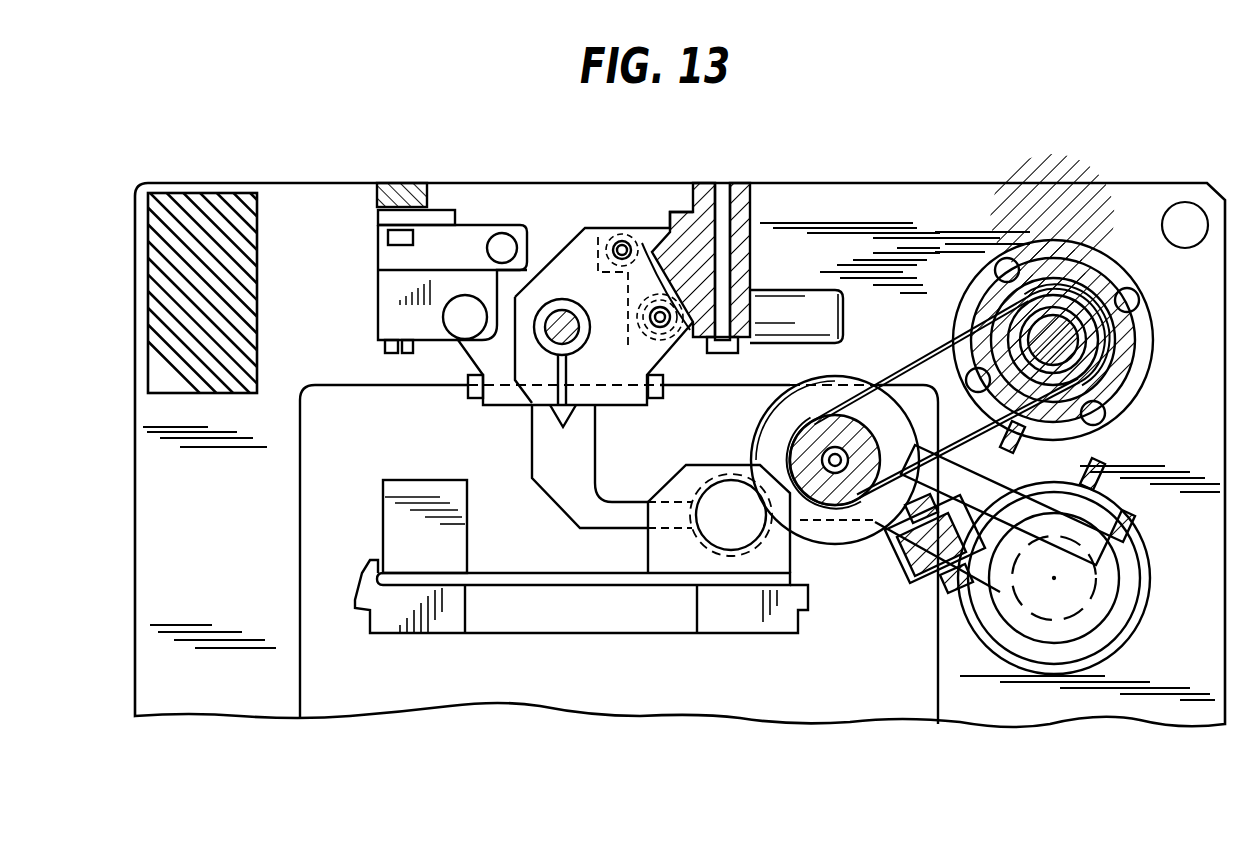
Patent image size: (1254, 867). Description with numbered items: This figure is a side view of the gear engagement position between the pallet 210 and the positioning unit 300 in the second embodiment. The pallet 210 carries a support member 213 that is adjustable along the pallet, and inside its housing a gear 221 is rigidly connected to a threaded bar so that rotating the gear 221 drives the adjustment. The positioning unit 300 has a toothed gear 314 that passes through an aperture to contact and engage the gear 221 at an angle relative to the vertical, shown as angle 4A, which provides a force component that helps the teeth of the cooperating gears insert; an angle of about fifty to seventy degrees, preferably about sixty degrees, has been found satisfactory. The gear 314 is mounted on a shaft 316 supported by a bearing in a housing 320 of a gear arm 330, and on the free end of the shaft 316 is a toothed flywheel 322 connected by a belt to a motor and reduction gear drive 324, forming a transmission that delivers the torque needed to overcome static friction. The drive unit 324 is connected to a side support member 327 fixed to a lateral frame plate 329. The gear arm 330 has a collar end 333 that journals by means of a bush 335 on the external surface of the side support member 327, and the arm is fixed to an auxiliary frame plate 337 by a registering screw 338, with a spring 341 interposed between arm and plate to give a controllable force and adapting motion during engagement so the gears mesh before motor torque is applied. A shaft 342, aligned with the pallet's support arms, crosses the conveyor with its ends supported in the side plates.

The positioning unit 300 is at (936, 178).
The lateral frame plate 329 is at (1008, 196).
The shaft 342 is at (590, 297).
The support member 213 is at (540, 455).
The gear 221 is at (703, 537).
The toothed gear 314 is at (740, 462).
The pallet 210 is at (392, 627).
The housing 320 is at (772, 407).
The toothed flywheel 322 is at (860, 402).
The shaft 316 is at (806, 462).
The detail reference 4A is at (800, 537).
The gear arm 330 is at (877, 533).
The motor and reduction gear drive 324 is at (1137, 368).
The auxiliary frame plate 337 is at (1022, 468).
The registering screw 338 is at (955, 534).
The spring 341 is at (912, 578).
The side support member 327 is at (1120, 612).
The bush 335 is at (1105, 572).
The collar end 333 is at (998, 648).